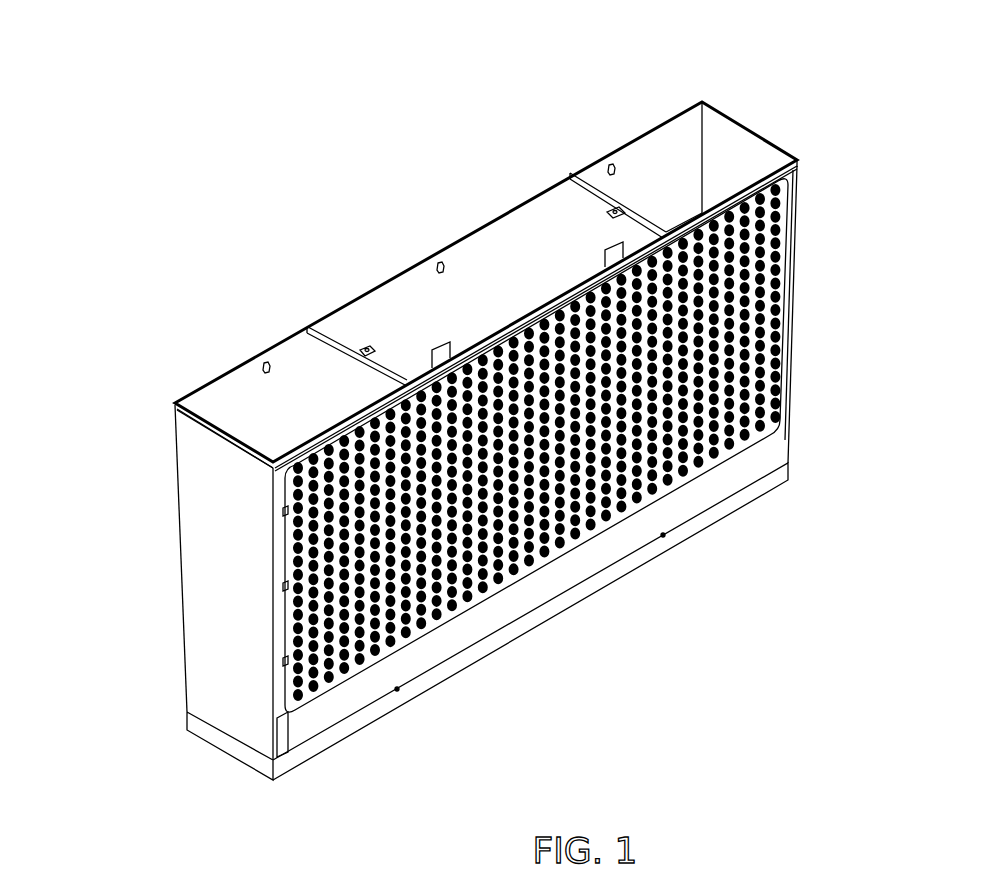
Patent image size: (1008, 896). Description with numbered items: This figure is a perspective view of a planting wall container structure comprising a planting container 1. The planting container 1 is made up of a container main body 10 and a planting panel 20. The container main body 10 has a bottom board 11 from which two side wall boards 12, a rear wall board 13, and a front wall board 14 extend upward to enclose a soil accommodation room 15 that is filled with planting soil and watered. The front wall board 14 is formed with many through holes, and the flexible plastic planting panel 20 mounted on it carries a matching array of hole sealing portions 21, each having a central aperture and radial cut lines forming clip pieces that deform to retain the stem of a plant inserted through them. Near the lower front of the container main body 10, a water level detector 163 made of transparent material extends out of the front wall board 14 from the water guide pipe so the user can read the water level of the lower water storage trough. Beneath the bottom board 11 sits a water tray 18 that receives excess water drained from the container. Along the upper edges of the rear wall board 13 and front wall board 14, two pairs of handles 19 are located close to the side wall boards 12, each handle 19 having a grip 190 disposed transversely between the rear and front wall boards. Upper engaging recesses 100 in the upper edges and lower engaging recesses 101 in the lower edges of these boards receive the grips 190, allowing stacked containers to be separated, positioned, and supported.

The planting container 1 is at (572, 138).
The container main body 10 is at (182, 582).
The bottom board 11 is at (218, 731).
The side wall board 12 is at (203, 652).
The rear wall board 13 is at (480, 223).
The front wall board 14 is at (792, 276).
The soil accommodation room 15 is at (673, 133).
The water tray 18 is at (498, 638).
The handle 19 is at (233, 367).
The planting panel 20 is at (751, 412).
The hole sealing portion 21 is at (778, 343).
The upper engaging recess 100 is at (310, 322).
The lower engaging recess 101 is at (664, 534).
The water level detector 163 is at (282, 740).
The grip 190 is at (342, 343).